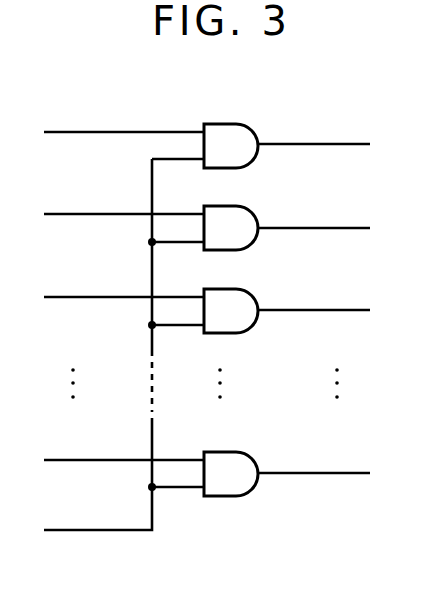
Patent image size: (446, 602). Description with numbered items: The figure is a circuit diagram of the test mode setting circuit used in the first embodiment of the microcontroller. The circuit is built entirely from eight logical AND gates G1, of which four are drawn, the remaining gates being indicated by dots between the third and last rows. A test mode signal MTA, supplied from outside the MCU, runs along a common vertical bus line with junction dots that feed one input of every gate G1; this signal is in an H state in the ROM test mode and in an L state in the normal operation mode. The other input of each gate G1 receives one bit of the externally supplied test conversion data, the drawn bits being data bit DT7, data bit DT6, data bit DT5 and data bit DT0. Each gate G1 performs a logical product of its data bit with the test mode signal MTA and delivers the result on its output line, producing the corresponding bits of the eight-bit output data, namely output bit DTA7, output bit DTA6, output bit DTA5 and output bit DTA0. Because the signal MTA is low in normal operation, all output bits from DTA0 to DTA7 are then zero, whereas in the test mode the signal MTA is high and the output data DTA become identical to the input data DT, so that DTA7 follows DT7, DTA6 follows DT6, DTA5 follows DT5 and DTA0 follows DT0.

The logical AND gate G1 is at (231, 296).
The test mode signal MTA is at (124, 344).
The test conversion data bit 7 DT7 is at (124, 115).
The test conversion data bit 6 DT6 is at (124, 197).
The test conversion data bit 5 DT5 is at (124, 280).
The test conversion data bit 0 DT0 is at (124, 444).
The output data bit 7 DTA7 is at (314, 127).
The output data bit 6 DTA6 is at (314, 210).
The output data bit 5 DTA5 is at (314, 292).
The output data bit 0 DTA0 is at (314, 457).